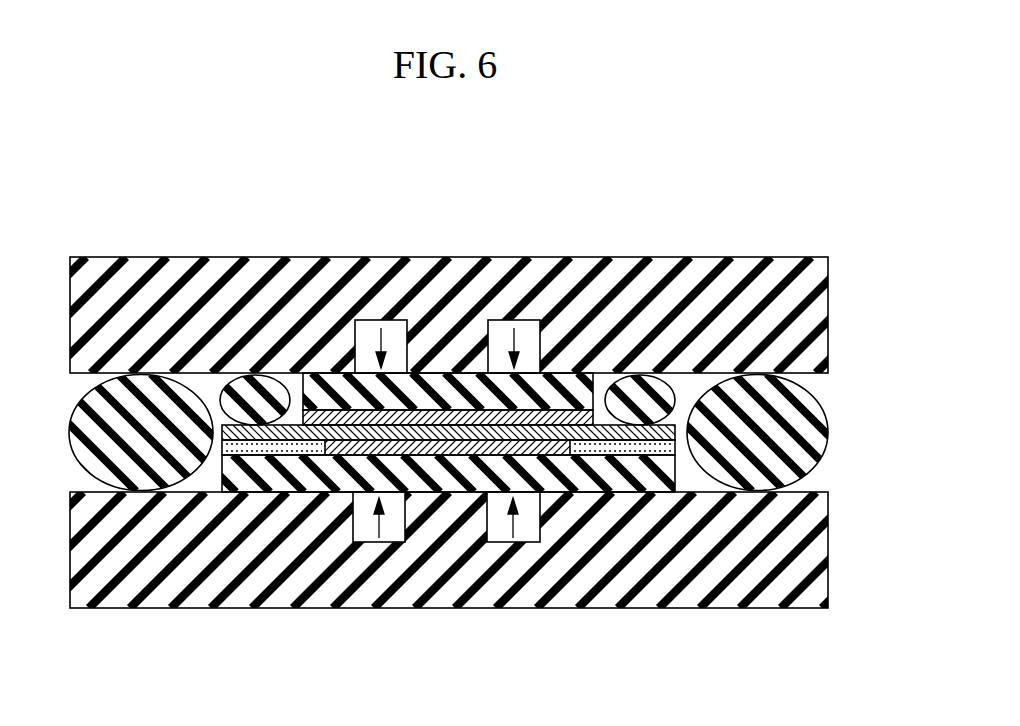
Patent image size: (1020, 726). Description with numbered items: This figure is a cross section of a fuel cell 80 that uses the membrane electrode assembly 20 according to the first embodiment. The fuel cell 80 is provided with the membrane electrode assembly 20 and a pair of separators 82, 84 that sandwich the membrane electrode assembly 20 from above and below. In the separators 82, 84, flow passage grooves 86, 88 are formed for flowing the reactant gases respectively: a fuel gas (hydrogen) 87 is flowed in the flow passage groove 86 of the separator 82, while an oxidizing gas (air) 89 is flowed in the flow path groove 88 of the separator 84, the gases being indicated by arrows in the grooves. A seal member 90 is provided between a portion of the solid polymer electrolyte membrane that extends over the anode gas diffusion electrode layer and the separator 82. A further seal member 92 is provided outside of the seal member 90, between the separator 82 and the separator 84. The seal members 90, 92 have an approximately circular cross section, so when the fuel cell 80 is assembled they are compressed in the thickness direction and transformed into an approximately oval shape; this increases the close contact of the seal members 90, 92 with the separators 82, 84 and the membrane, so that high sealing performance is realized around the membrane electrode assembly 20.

The fuel cell 80 is at (692, 178).
The separator 82 is at (277, 280).
The separator 84 is at (320, 598).
The flow passage groove 86 is at (383, 326).
The fuel gas (hydrogen) 87 is at (378, 342).
The flow passage groove 88 is at (392, 546).
The oxidizing gas (air) 89 is at (378, 525).
The seal member 90 is at (247, 385).
The seal member 92 is at (95, 385).
The membrane electrode assembly 20 is at (454, 352).